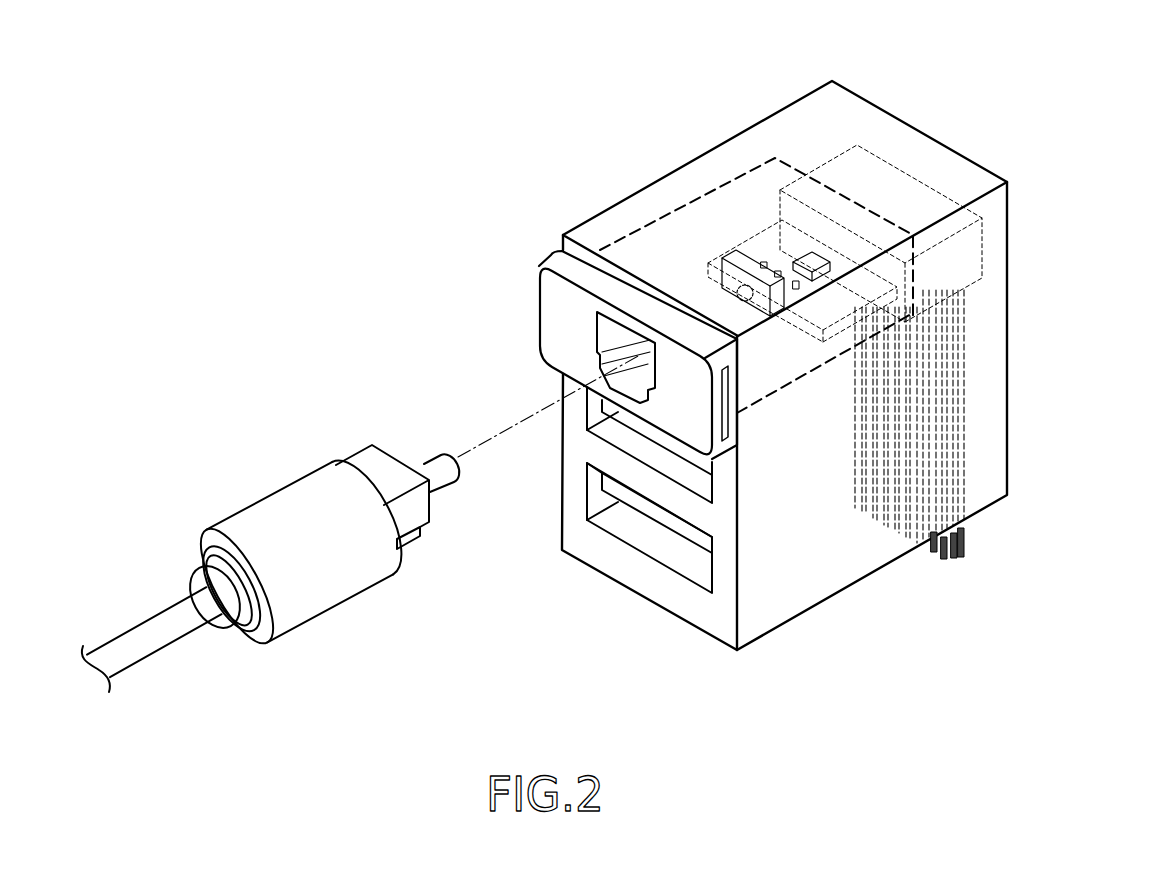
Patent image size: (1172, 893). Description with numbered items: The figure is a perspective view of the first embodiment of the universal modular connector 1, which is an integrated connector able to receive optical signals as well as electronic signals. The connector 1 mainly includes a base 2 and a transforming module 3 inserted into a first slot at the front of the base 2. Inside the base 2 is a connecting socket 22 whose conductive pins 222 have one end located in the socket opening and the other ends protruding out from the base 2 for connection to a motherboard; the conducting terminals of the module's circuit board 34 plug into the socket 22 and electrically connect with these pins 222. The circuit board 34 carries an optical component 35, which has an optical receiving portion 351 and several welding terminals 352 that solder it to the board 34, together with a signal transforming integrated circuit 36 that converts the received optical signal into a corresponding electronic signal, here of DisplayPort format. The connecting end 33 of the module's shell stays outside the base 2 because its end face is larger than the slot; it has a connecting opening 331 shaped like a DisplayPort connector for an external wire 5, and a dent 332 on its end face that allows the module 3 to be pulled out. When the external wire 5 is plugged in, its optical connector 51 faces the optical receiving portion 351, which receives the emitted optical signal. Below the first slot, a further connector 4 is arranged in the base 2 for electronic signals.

The universal modular connector 1 is at (1059, 356).
The base 2 is at (789, 101).
The connecting socket 22 is at (965, 258).
The conductive pins 222 is at (965, 538).
The transforming module 3 is at (548, 265).
The connecting end 33 is at (555, 309).
The connecting opening 331 is at (608, 330).
The dent 332 is at (730, 433).
The circuit board 34 is at (772, 242).
The optical component 35 is at (735, 292).
The optical receiving portion 351 is at (743, 297).
The welding terminals 352 is at (737, 260).
The signal transforming integrated circuit 36 is at (807, 260).
The connector 4 is at (668, 518).
The external wire 5 is at (337, 577).
The optical connector 51 is at (443, 473).